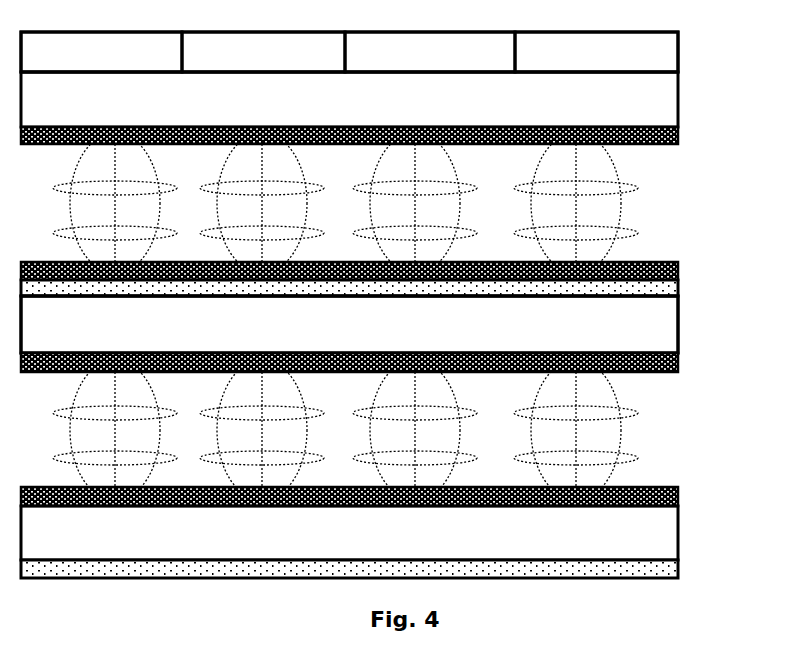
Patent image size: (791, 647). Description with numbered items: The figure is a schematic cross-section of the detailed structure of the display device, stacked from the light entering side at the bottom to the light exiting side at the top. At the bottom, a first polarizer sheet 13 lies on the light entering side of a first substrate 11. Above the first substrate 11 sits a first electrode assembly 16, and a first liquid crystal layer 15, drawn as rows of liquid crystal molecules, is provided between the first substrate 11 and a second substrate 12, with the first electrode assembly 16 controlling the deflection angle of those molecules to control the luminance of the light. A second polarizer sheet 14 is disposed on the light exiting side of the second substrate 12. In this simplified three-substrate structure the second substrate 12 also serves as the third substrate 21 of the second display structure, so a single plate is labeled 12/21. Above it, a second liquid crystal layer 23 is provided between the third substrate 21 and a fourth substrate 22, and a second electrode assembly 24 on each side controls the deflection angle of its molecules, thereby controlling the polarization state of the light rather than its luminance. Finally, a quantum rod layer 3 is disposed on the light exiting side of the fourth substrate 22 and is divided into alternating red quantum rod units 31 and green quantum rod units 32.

The quantum rod layer 3 is at (372, 43).
The red quantum rod unit 31 is at (268, 52).
The green quantum rod unit 32 is at (430, 52).
The fourth substrate 22 is at (678, 102).
The second electrode assembly 24 is at (678, 138).
The second liquid crystal layer 23 is at (637, 220).
The second polarizer sheet 14 is at (678, 292).
The second substrate 12 is at (678, 328).
The third substrate 21 is at (349, 324).
The first electrode assembly 16 is at (678, 362).
The first liquid crystal layer 15 is at (637, 445).
The first substrate 11 is at (678, 533).
The first polarizer sheet 13 is at (678, 568).